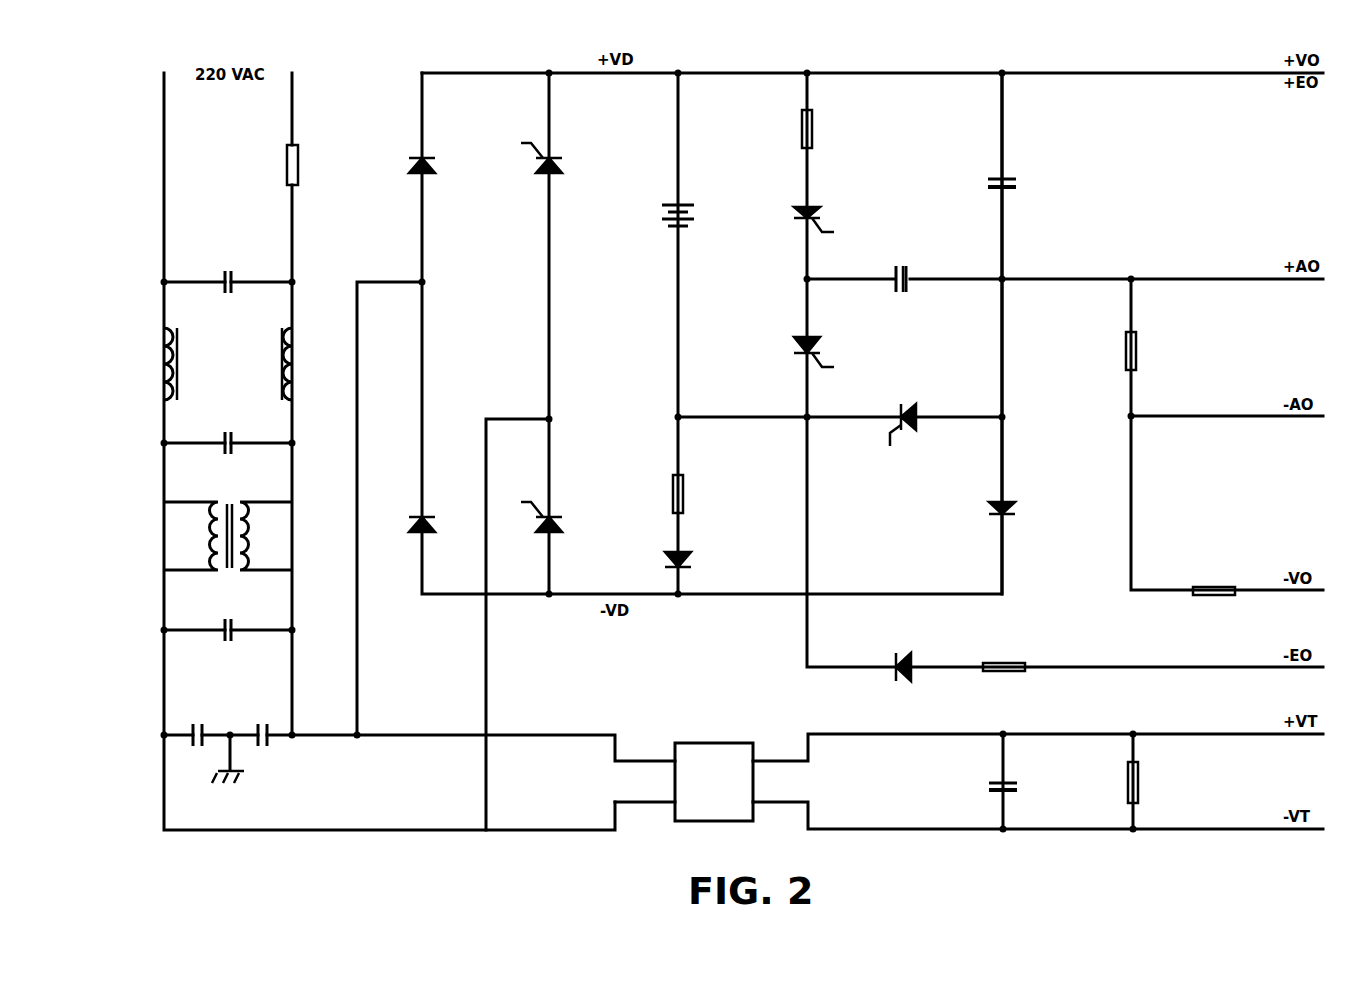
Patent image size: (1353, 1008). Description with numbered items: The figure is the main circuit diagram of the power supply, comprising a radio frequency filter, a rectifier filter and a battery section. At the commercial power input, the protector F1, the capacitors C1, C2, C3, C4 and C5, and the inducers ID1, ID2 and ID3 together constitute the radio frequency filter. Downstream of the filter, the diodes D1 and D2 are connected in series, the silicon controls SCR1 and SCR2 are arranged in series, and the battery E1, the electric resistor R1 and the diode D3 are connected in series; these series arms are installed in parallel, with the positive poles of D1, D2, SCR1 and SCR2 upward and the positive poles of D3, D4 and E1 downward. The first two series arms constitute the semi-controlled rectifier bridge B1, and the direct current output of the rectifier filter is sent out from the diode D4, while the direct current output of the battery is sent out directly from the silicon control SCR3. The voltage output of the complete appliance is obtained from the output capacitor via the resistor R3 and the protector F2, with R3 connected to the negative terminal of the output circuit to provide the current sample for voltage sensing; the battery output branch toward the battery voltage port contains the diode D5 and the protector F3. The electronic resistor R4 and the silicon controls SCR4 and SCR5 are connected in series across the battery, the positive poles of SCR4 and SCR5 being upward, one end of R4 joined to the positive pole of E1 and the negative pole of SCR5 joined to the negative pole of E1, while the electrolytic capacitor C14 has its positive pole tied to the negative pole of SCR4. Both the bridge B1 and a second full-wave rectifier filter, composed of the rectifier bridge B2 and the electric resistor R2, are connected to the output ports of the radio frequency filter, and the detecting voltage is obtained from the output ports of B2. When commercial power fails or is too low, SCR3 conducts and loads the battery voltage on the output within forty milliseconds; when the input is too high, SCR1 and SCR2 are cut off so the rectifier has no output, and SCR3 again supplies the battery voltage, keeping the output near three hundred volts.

The protector F1 is at (302, 154).
The capacitor C1 is at (228, 274).
The capacitor C2 is at (228, 435).
The capacitor C3 is at (228, 622).
The capacitor C4 is at (262, 728).
The capacitor C5 is at (197, 728).
The inducer ID1 is at (305, 364).
The inducer ID2 is at (188, 364).
The inducer ID3 is at (228, 527).
The diode D1 is at (432, 157).
The diode D2 is at (432, 516).
The diode D3 is at (691, 550).
The diode D4 is at (1014, 497).
The diode D5 is at (891, 658).
The silicon control SCR1 is at (558, 160).
The silicon control SCR2 is at (558, 519).
The silicon control SCR3 is at (914, 415).
The silicon control SCR4 is at (816, 219).
The silicon control SCR5 is at (816, 350).
The semi-controlled rectifier bridge B1 is at (679, 333).
The rectifier bridge B2 is at (711, 773).
The battery E1 is at (687, 206).
The electric resistor R1 is at (669, 485).
The electric resistor R2 is at (1123, 775).
The resistor R3 is at (1141, 342).
The electronic resistor R4 is at (797, 120).
The electrolytic capacitor C14 is at (902, 268).
The protector F2 is at (1210, 580).
The protector F3 is at (1000, 657).